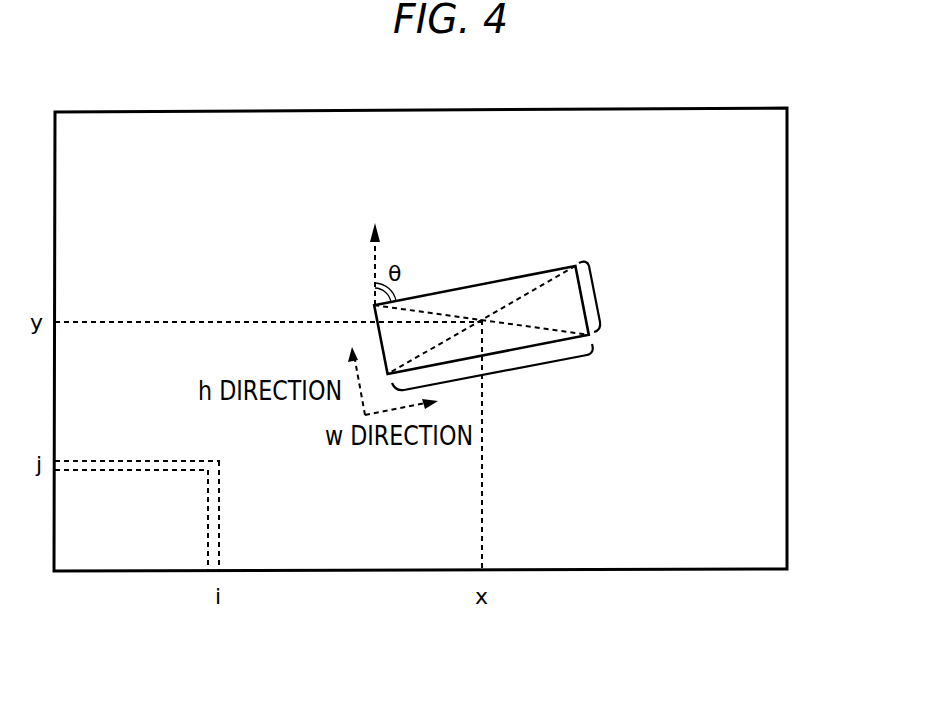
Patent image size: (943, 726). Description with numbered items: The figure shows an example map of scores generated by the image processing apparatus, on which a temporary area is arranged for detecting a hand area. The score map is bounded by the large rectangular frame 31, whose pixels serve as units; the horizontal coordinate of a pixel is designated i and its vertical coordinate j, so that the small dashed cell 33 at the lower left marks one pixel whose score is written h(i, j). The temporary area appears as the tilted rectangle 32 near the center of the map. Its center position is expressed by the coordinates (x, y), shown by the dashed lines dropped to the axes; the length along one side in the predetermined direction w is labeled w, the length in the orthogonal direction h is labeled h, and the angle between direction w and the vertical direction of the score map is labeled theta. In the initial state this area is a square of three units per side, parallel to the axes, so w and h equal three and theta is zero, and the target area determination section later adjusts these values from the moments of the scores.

The image frame 31 is at (788, 337).
The rotated rectangular object region 32 is at (477, 285).
The pixel cell h(i, j) 33 is at (172, 514).